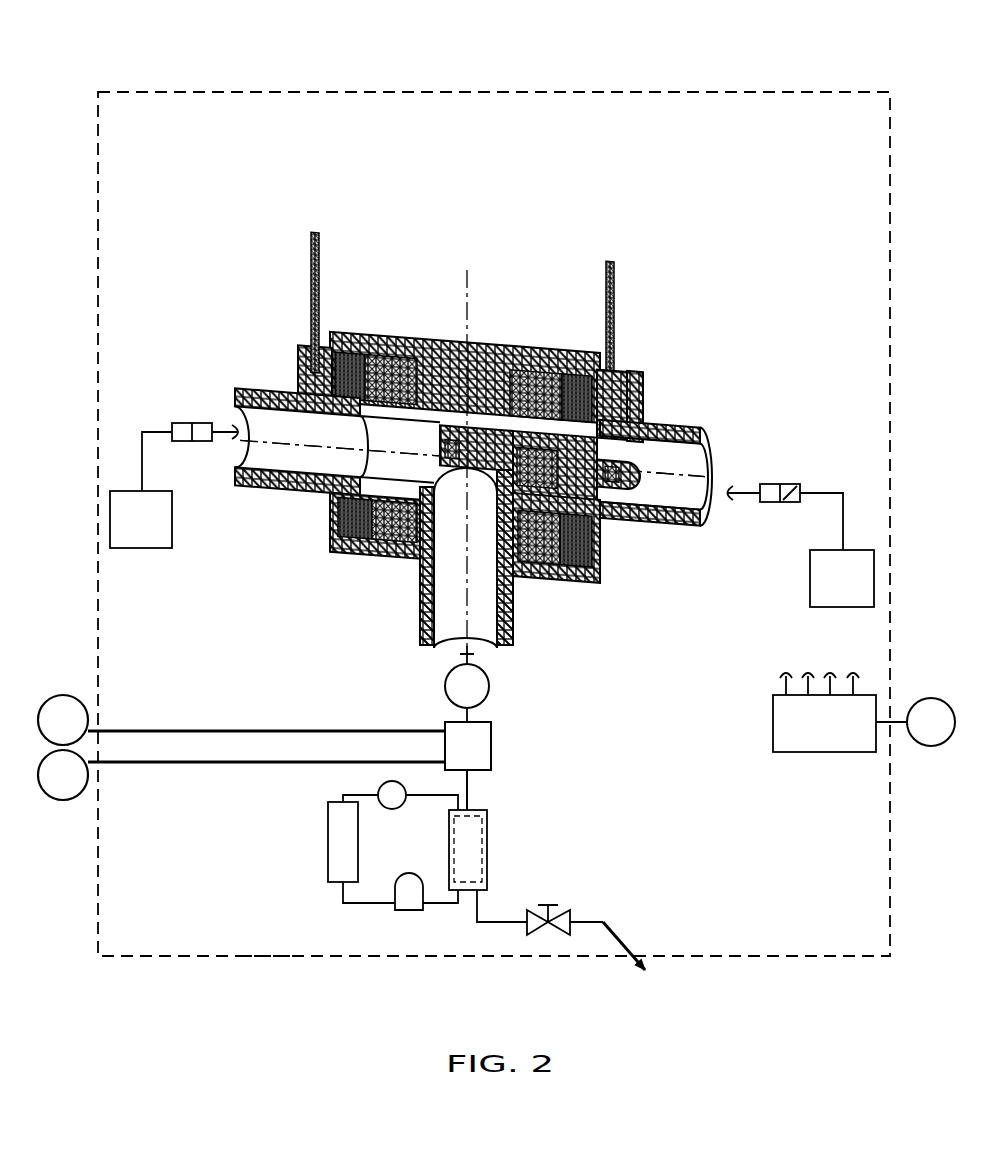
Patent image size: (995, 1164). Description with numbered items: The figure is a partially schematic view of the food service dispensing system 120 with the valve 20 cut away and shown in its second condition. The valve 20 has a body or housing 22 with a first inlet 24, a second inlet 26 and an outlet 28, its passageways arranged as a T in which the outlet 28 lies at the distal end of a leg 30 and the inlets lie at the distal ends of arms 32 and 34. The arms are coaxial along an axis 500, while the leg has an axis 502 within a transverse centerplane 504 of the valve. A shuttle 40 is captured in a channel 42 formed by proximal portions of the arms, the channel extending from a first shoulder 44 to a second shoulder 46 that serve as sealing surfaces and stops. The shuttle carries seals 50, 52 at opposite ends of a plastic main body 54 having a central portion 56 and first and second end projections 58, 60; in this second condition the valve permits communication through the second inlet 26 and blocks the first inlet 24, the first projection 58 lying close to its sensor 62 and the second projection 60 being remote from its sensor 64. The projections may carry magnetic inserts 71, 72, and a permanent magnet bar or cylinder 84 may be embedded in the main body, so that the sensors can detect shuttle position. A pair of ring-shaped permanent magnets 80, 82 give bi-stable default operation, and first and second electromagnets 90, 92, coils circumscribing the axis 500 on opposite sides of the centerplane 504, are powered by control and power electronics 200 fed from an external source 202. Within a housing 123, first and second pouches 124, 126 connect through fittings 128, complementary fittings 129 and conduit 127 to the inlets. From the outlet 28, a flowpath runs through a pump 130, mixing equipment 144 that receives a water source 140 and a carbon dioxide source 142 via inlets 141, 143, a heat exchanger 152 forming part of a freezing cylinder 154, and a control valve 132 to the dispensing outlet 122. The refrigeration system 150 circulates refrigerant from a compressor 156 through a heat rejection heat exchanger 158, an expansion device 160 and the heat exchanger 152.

The valve 20 is at (722, 285).
The body 22 is at (563, 318).
The first inlet 24 is at (718, 470).
The second inlet 26 is at (232, 456).
The outlet 28 is at (498, 665).
The leg 30 is at (484, 608).
The arm 32 is at (683, 432).
The arm 34 is at (265, 420).
The shuttle 40 is at (512, 545).
The channel 42 is at (377, 432).
The first shoulder 44 is at (630, 508).
The second shoulder 46 is at (292, 486).
The seal 50 is at (620, 440).
The seal 52 is at (478, 350).
The main body 54 is at (533, 437).
The central portion 56 is at (578, 578).
The first end projection 58 is at (658, 452).
The second end projection 60 is at (450, 438).
The sensor 62 is at (632, 435).
The sensor 64 is at (300, 352).
The magnetic insert 71 is at (633, 477).
The magnetic insert 72 is at (415, 528).
The first permanent magnet 80 is at (510, 565).
The second permanent magnet 82 is at (385, 560).
The permanent magnet bar or cylinder 84 is at (542, 540).
The first electromagnet 90 is at (612, 533).
The second electromagnet 92 is at (340, 527).
The dispensing system 120 is at (640, 62).
The dispensing outlet 122 is at (650, 990).
The housing 123 is at (240, 960).
The first pouch 124 is at (825, 591).
The second pouch 126 is at (123, 533).
The conduit 127 is at (846, 518).
The fitting 128 is at (797, 488).
The complementary fitting 129 is at (767, 502).
The pump 130 is at (450, 699).
The control valve 132 is at (571, 896).
The water source 140 is at (46, 788).
The inlet 141 is at (90, 780).
The carbon dioxide source 142 is at (46, 733).
The inlet 143 is at (90, 712).
The mixing equipment 144 is at (450, 759).
The refrigeration system 150 is at (300, 845).
The heat exchanger 152 is at (490, 843).
The freezing cylinder 154 is at (498, 876).
The compressor 156 is at (407, 893).
The heat exchanger 158 is at (355, 828).
The expansion device 160 is at (393, 806).
The control and power electronics 200 is at (808, 736).
The external source 202 is at (914, 735).
The axis 500 is at (695, 445).
The axis 502 is at (465, 578).
The transverse centerplane 504 is at (467, 308).